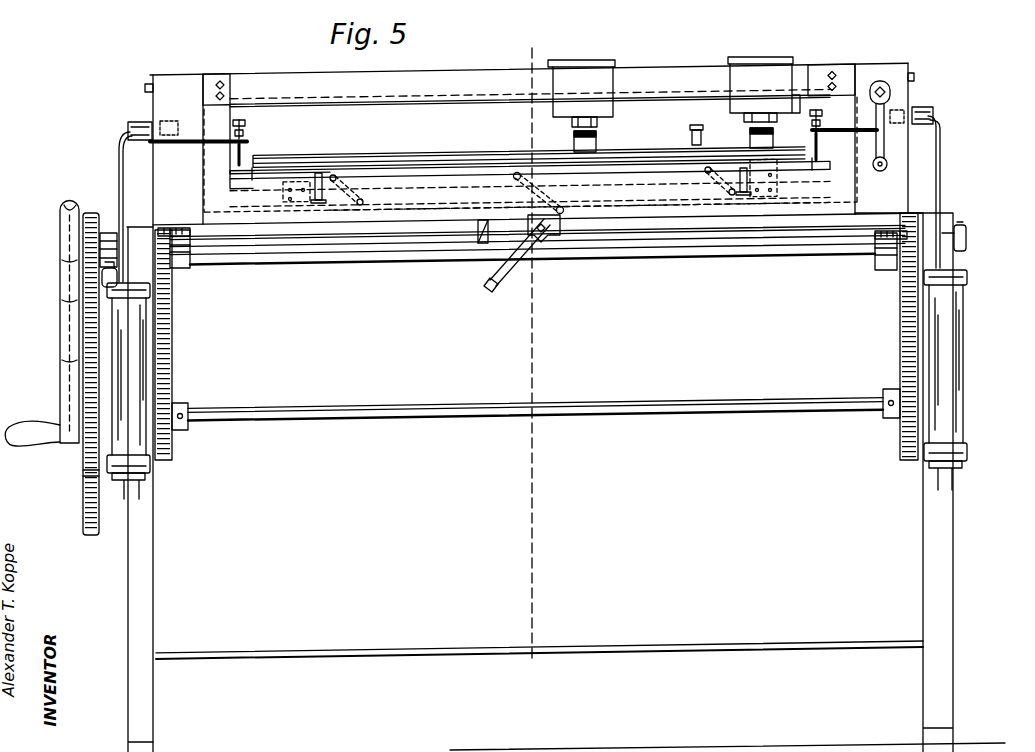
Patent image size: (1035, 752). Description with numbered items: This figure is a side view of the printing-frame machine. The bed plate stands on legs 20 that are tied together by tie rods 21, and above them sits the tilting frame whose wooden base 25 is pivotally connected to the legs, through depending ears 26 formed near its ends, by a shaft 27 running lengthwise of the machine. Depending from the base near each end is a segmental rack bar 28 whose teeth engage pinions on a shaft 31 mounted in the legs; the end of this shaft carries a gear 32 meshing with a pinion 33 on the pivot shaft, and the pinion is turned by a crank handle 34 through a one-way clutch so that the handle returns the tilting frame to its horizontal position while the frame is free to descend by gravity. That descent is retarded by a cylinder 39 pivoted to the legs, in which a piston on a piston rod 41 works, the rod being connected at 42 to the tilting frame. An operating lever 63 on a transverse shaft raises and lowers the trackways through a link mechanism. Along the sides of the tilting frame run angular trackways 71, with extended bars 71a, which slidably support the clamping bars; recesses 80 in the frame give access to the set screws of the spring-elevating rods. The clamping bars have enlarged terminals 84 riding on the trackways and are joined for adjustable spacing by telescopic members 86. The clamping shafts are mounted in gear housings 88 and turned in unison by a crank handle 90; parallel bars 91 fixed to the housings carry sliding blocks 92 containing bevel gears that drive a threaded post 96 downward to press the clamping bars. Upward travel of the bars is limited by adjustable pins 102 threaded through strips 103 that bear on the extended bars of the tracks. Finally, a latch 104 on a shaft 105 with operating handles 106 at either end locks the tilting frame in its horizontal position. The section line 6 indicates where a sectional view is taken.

The section line 6- 6 is at (533, 50).
The legs 20 is at (153, 520).
The tie rods 21 is at (632, 653).
The base 25 is at (632, 214).
The end bearing block 26 is at (189, 272).
The shaft 27 is at (333, 258).
The segmental rack bar 28 is at (172, 374).
The shaft 31 is at (605, 409).
The gear 32 is at (87, 478).
The pinion 33 is at (92, 213).
The crank handle 34 is at (68, 339).
The cylinder 39 is at (135, 356).
The piston rod 41 is at (124, 155).
The connection of piston rod to tilting frame 42 is at (139, 122).
The operating lever 63 is at (504, 283).
The trackways 71 is at (432, 153).
The extended bars 71a is at (812, 170).
The recesses 80 is at (318, 203).
The enlarged terminals 84 is at (574, 141).
The members 86 is at (663, 133).
The gear housings 88 is at (160, 87).
The crank handle 90 is at (884, 146).
The bars 91 is at (668, 69).
The blocks 92 is at (591, 61).
The threaded post 96 is at (572, 128).
The pins 102 is at (246, 129).
The strips 103 is at (248, 141).
The latch 104 is at (483, 246).
The shaft 105 is at (367, 242).
The operating handles 106 is at (107, 282).